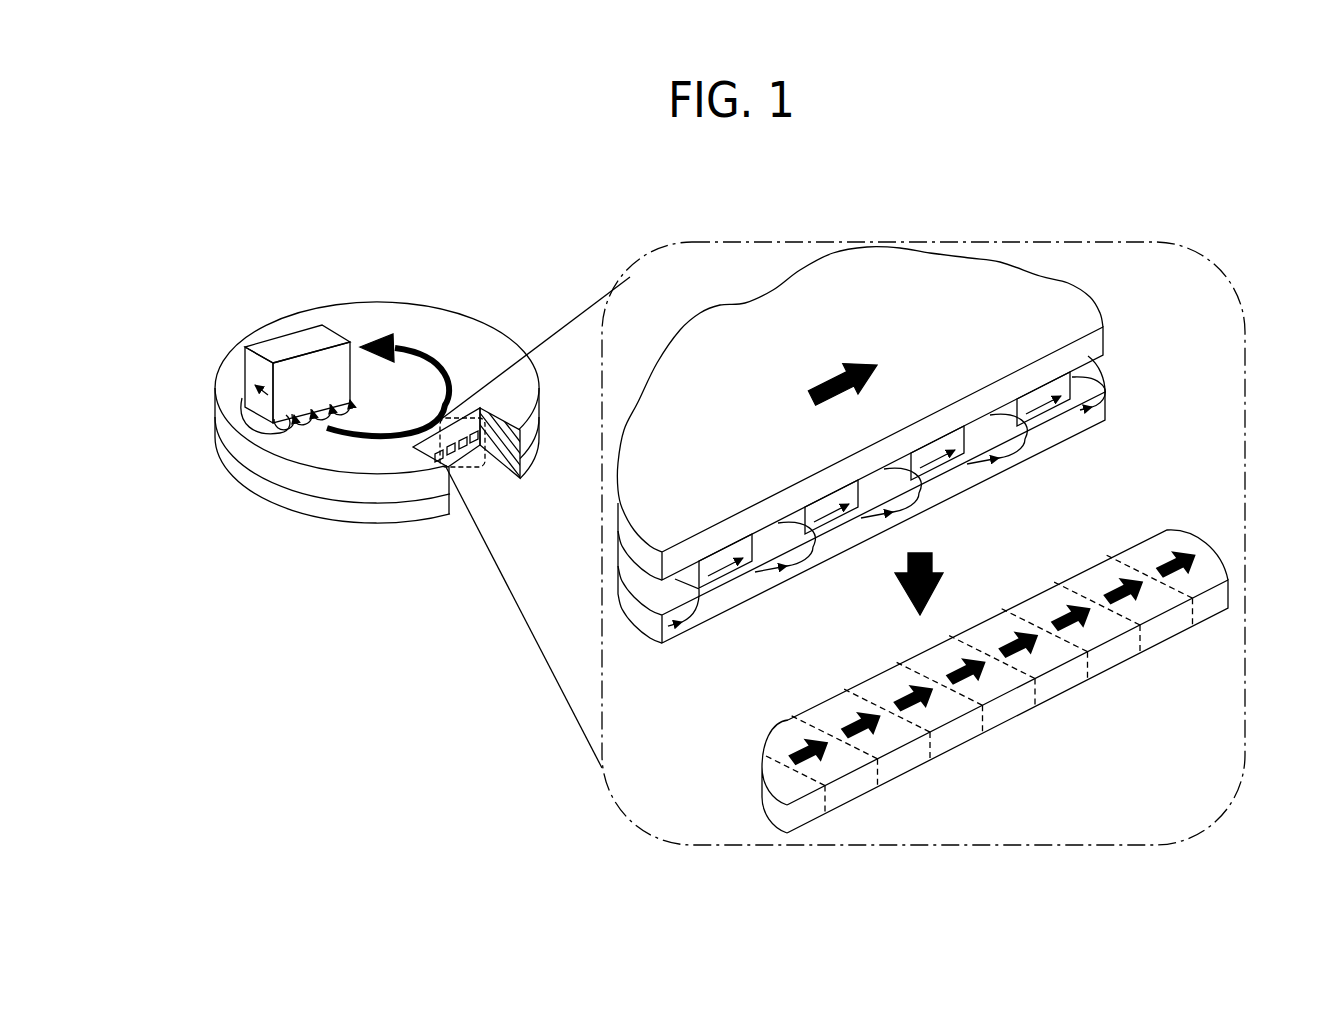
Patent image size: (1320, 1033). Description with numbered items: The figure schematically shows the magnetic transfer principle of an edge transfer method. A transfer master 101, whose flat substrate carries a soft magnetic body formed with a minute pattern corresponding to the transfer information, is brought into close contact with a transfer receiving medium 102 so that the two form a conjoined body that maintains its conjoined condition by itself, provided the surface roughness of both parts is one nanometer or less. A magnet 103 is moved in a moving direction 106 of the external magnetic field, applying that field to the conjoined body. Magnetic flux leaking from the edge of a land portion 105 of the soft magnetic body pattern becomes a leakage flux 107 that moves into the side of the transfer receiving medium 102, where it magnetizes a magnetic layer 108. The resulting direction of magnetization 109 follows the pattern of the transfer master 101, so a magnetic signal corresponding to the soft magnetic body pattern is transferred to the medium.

The transfer master 101 is at (428, 318).
The transfer receiving medium 102 is at (280, 497).
The magnet 103 is at (305, 340).
The land portion 105 is at (942, 475).
The moving direction of the external magnetic field 106 is at (860, 352).
The leakage flux 107 is at (900, 518).
The magnetic layer 108 is at (1078, 418).
The direction of magnetization 109 is at (990, 686).